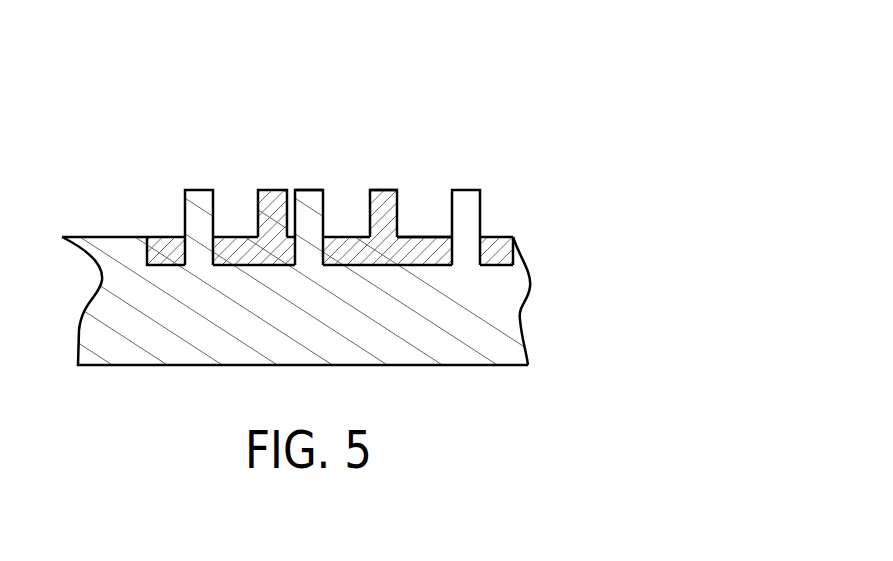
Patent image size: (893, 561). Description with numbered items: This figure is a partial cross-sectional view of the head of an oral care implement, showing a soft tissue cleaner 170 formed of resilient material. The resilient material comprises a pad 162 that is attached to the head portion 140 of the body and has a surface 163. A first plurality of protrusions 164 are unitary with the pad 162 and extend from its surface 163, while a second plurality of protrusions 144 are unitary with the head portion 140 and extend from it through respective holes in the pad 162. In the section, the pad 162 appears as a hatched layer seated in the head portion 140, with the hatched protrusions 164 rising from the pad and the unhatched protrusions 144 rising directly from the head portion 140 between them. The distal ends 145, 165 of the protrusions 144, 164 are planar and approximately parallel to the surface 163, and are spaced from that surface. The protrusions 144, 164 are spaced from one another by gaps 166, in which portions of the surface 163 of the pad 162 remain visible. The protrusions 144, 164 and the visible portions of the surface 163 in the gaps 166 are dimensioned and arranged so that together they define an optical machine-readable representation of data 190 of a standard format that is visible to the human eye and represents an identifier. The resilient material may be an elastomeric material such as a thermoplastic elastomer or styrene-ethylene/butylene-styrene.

The head portion 140 is at (192, 335).
The surface 163 is at (165, 236).
The pad 162 is at (228, 245).
The soft tissue cleaner 170 is at (270, 148).
The second plurality of protrusions 144 is at (308, 208).
The distal end 145 is at (305, 188).
The first plurality of protrusions 164 is at (398, 192).
The distal end 165 is at (385, 190).
The gap 166 is at (422, 207).
The optical machine-readable representation of data 190 is at (177, 170).